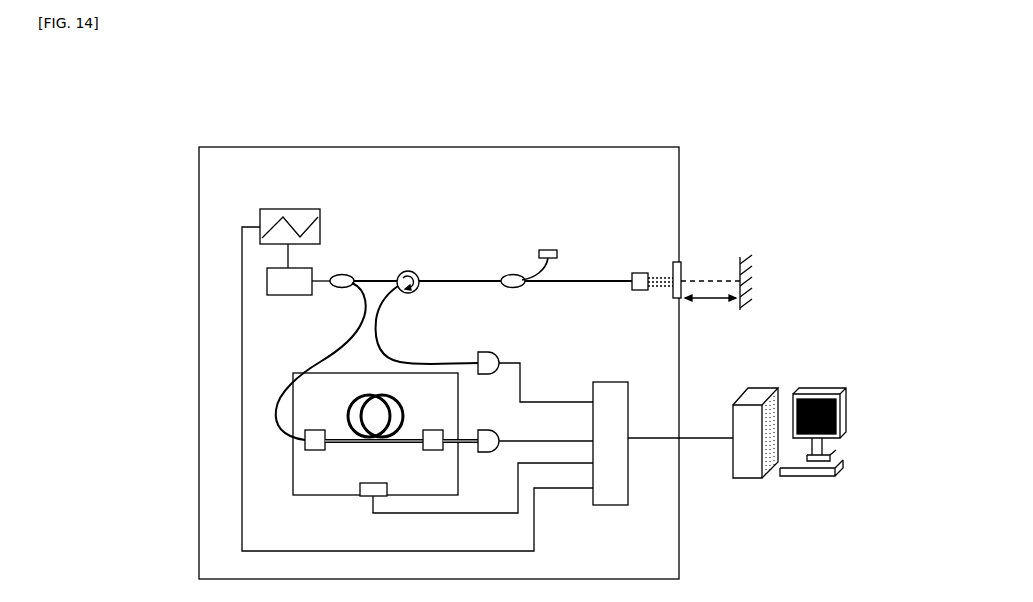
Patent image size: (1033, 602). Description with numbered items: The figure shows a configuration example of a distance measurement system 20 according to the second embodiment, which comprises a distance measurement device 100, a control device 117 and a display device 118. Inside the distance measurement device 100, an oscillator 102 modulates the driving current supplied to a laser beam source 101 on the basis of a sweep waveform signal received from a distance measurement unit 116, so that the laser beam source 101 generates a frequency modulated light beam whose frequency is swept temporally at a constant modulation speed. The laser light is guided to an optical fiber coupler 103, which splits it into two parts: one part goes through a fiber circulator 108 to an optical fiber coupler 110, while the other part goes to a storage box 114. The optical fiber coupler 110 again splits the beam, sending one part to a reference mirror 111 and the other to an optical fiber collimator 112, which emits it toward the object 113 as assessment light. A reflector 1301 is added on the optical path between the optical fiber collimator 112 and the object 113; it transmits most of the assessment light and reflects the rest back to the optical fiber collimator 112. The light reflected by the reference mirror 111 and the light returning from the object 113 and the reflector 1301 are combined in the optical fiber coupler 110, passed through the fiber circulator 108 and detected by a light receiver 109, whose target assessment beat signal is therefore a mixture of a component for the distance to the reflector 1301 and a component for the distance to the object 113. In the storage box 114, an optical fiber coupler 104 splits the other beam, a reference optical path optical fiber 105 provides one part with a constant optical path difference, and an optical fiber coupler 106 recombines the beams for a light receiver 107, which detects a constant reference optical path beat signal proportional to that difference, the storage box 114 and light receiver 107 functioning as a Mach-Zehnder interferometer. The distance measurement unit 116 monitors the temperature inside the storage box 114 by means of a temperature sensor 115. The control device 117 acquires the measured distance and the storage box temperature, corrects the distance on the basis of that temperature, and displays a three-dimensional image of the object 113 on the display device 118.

The distance measurement system 20 is at (684, 121).
The distance measurement device 100 is at (431, 148).
The laser beam source 101 is at (302, 297).
The oscillator 102 is at (290, 206).
The optical fiber coupler 103 is at (337, 278).
The optical fiber coupler 104 is at (318, 450).
The reference optical path optical fiber 105 is at (378, 395).
The optical fiber coupler 106 is at (434, 452).
The light receiver 107 is at (488, 454).
The fiber circulator 108 is at (401, 272).
The light receiver 109 is at (488, 377).
The optical fiber coupler 110 is at (511, 287).
The reference mirror 111 is at (550, 250).
The optical fiber collimator 112 is at (638, 266).
The object 113 is at (748, 258).
The storage box 114 is at (325, 383).
The temperature sensor 115 is at (365, 496).
The distance measurement unit 116 is at (621, 506).
The control device 117 is at (760, 388).
The display device 118 is at (815, 388).
The reflector 1301 is at (682, 266).